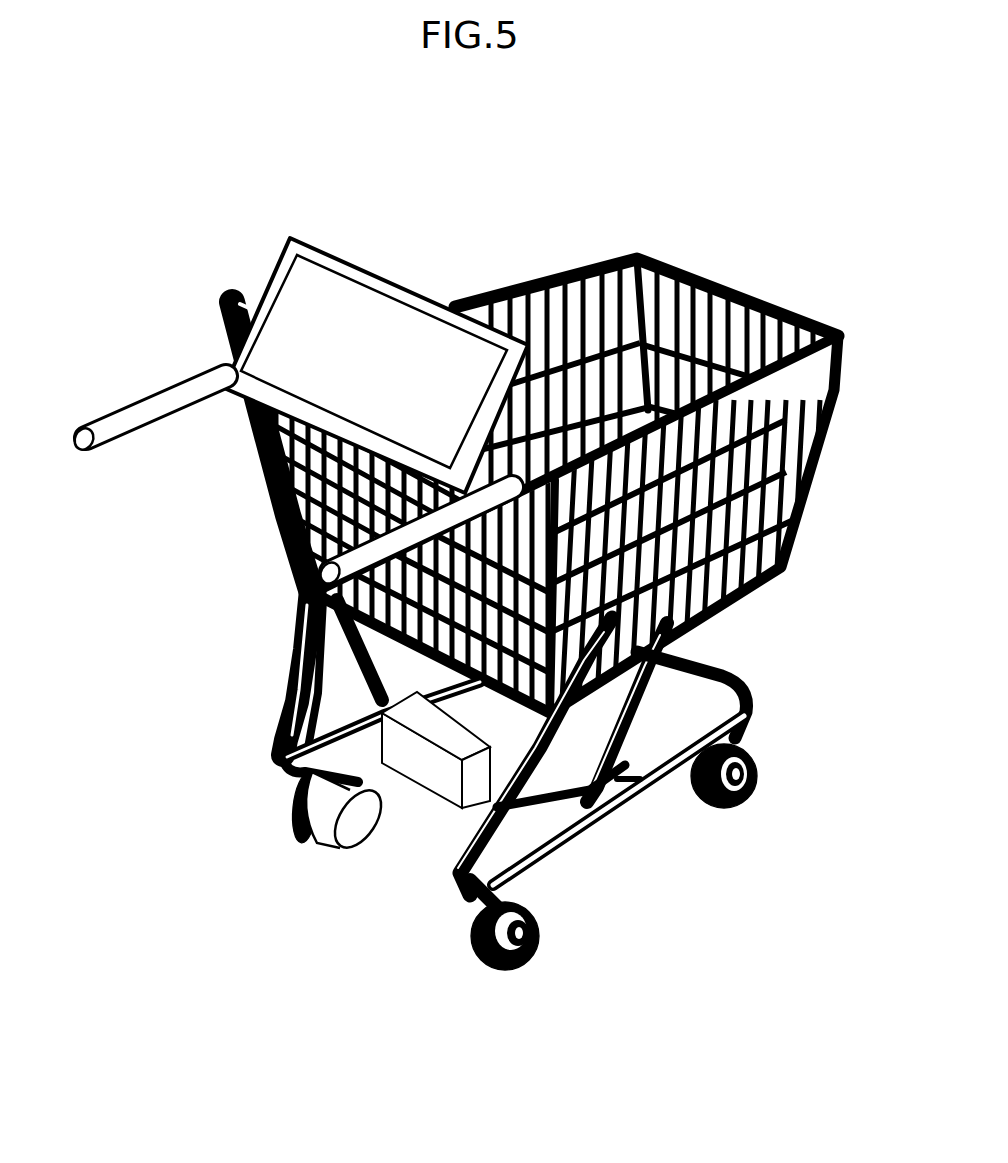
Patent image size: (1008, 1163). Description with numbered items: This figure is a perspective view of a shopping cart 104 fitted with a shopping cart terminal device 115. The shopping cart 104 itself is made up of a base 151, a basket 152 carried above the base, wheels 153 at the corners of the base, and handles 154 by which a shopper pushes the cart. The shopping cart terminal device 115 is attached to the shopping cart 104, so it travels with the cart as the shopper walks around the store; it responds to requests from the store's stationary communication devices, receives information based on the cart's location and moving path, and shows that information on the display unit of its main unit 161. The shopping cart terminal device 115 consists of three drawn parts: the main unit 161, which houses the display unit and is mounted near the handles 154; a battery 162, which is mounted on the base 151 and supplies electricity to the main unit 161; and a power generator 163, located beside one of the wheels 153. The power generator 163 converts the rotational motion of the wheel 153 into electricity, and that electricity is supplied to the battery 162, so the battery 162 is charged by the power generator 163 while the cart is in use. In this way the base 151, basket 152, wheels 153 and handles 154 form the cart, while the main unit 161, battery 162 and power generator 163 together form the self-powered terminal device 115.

The shopping cart 104 is at (465, 562).
The shopping cart terminal device 115 is at (280, 547).
The base 151 is at (752, 682).
The basket 152 is at (787, 308).
The wheels 153 is at (472, 934).
The handles 154 is at (150, 395).
The main unit 161 is at (345, 420).
The battery 162 is at (412, 760).
The power generator 163 is at (331, 810).